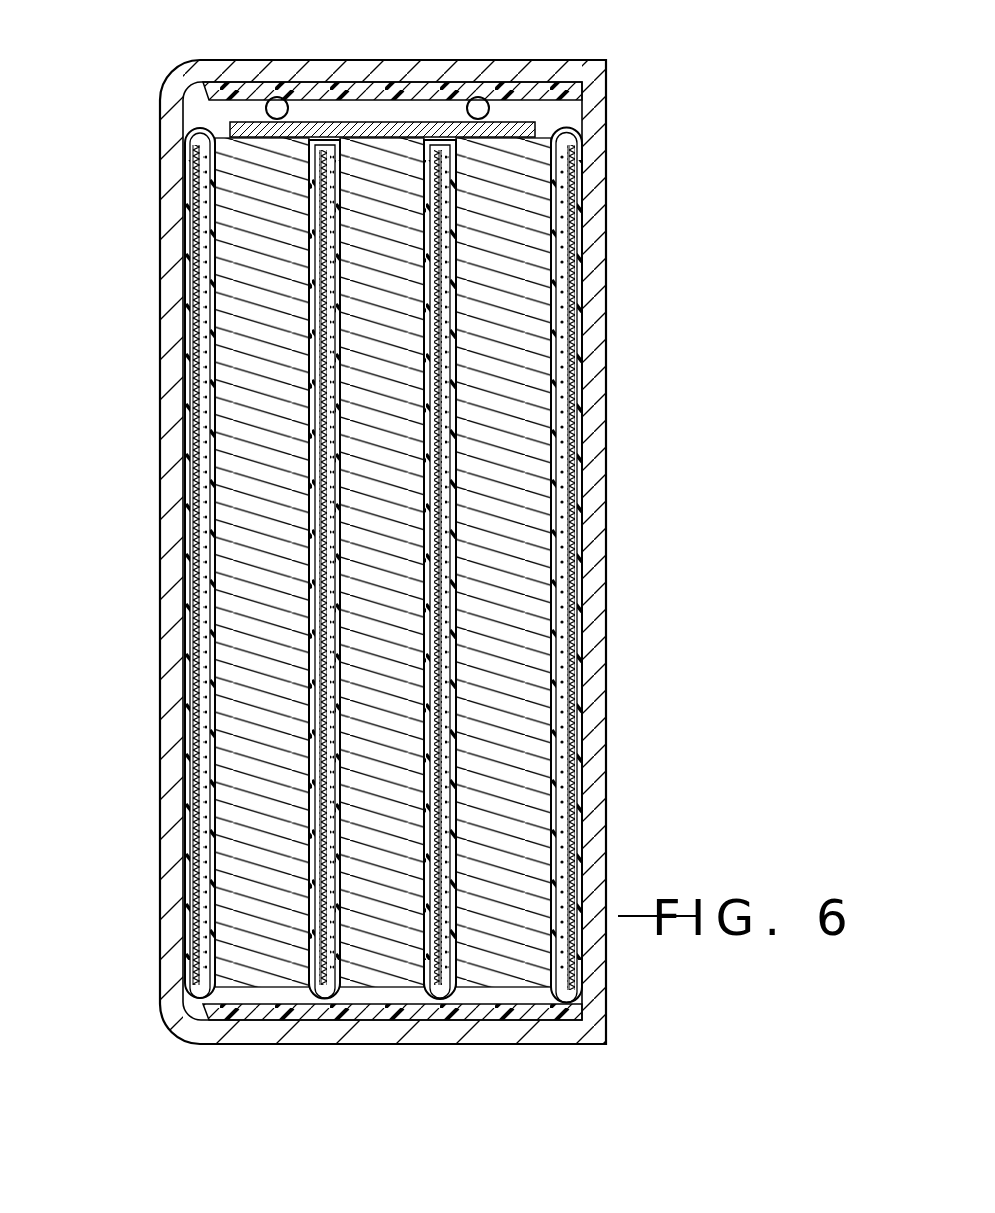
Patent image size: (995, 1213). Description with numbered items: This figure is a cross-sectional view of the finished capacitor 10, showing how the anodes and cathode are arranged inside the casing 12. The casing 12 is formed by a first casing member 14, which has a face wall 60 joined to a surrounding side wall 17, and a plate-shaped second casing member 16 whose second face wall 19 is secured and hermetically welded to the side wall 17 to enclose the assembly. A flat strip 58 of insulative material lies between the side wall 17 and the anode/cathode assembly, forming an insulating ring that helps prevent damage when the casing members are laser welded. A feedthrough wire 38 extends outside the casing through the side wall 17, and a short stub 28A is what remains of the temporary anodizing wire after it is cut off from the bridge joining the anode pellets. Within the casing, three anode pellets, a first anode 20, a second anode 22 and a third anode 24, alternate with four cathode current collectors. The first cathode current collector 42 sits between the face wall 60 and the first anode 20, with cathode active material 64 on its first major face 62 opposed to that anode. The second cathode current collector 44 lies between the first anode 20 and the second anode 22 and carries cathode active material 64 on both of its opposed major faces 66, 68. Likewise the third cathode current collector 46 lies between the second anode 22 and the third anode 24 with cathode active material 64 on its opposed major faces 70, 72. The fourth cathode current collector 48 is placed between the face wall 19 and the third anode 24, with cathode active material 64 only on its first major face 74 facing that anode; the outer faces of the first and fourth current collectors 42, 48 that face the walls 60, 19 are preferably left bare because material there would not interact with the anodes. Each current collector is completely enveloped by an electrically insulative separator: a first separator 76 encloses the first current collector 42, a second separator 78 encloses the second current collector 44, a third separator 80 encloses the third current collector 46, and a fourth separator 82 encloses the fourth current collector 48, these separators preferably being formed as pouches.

The capacitor 10 is at (363, 552).
The casing 12 is at (357, 527).
The first casing member 14 is at (160, 452).
The second casing member 16 is at (607, 302).
The surrounding side wall 17 is at (527, 60).
The second face wall 19 is at (578, 220).
The first anode 20 is at (262, 980).
The second anode 22 is at (373, 978).
The third anode 24 is at (503, 977).
The short stub 28A is at (470, 103).
The feedthrough wire 38 is at (275, 105).
The first cathode current collector 42 is at (156, 563).
The second cathode current collector 44 is at (318, 569).
The third cathode current collector 46 is at (446, 569).
The fourth cathode current collector 48 is at (573, 565).
The flat strip 58 is at (352, 92).
The face wall 60 is at (185, 373).
The first major face 62 is at (200, 606).
The cathode active material 64 is at (333, 298).
The first major face 66 is at (325, 388).
The second major face 68 is at (331, 342).
The first major face 70 is at (435, 490).
The second major face 72 is at (445, 460).
The first major face 74 is at (565, 520).
The first separator 76 is at (212, 174).
The second separator 78 is at (312, 247).
The third separator 80 is at (427, 193).
The fourth separator 82 is at (552, 222).